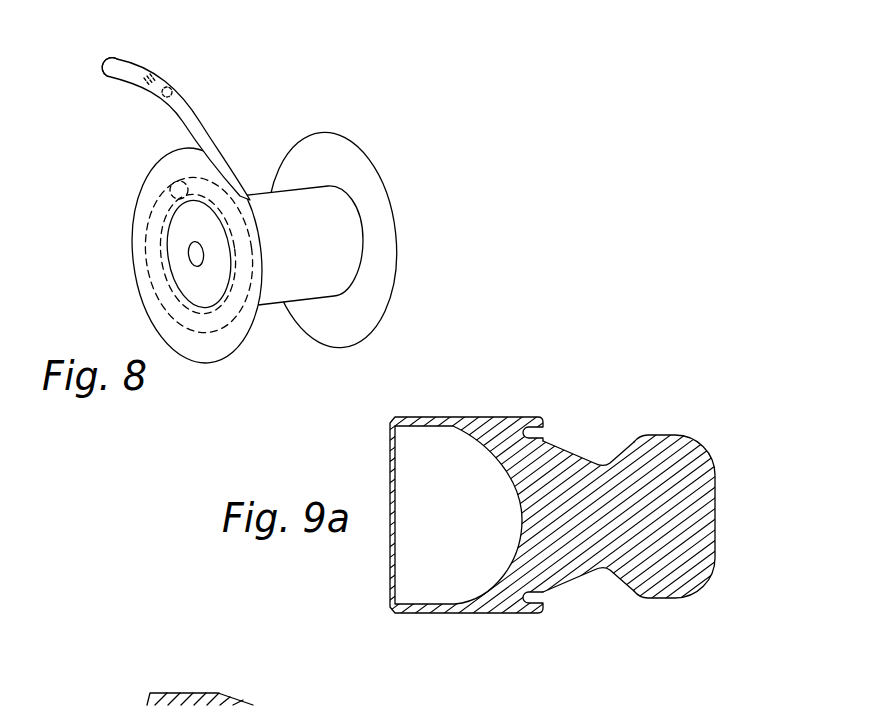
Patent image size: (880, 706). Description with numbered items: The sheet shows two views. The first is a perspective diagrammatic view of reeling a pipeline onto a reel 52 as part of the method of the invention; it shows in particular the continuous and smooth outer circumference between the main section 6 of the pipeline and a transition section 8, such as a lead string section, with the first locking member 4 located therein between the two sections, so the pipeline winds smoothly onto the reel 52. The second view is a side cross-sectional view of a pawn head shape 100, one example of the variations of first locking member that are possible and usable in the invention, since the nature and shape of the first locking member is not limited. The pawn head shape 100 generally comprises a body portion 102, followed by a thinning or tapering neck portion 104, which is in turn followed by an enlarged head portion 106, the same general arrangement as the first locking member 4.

In FIG. 8, the first locking member 4 is at (153, 82).
In FIG. 8, the main section 6 is at (138, 85).
In FIG. 8, the transition section 8 is at (221, 154).
In FIG. 8, the reel 52 is at (379, 182).
In FIG. 9A, the pawn head shape 100 is at (562, 435).
In FIG. 9A, the body portion 102 is at (470, 614).
In FIG. 9A, the neck portion 104 is at (575, 575).
In FIG. 9A, the head portion 106 is at (658, 599).